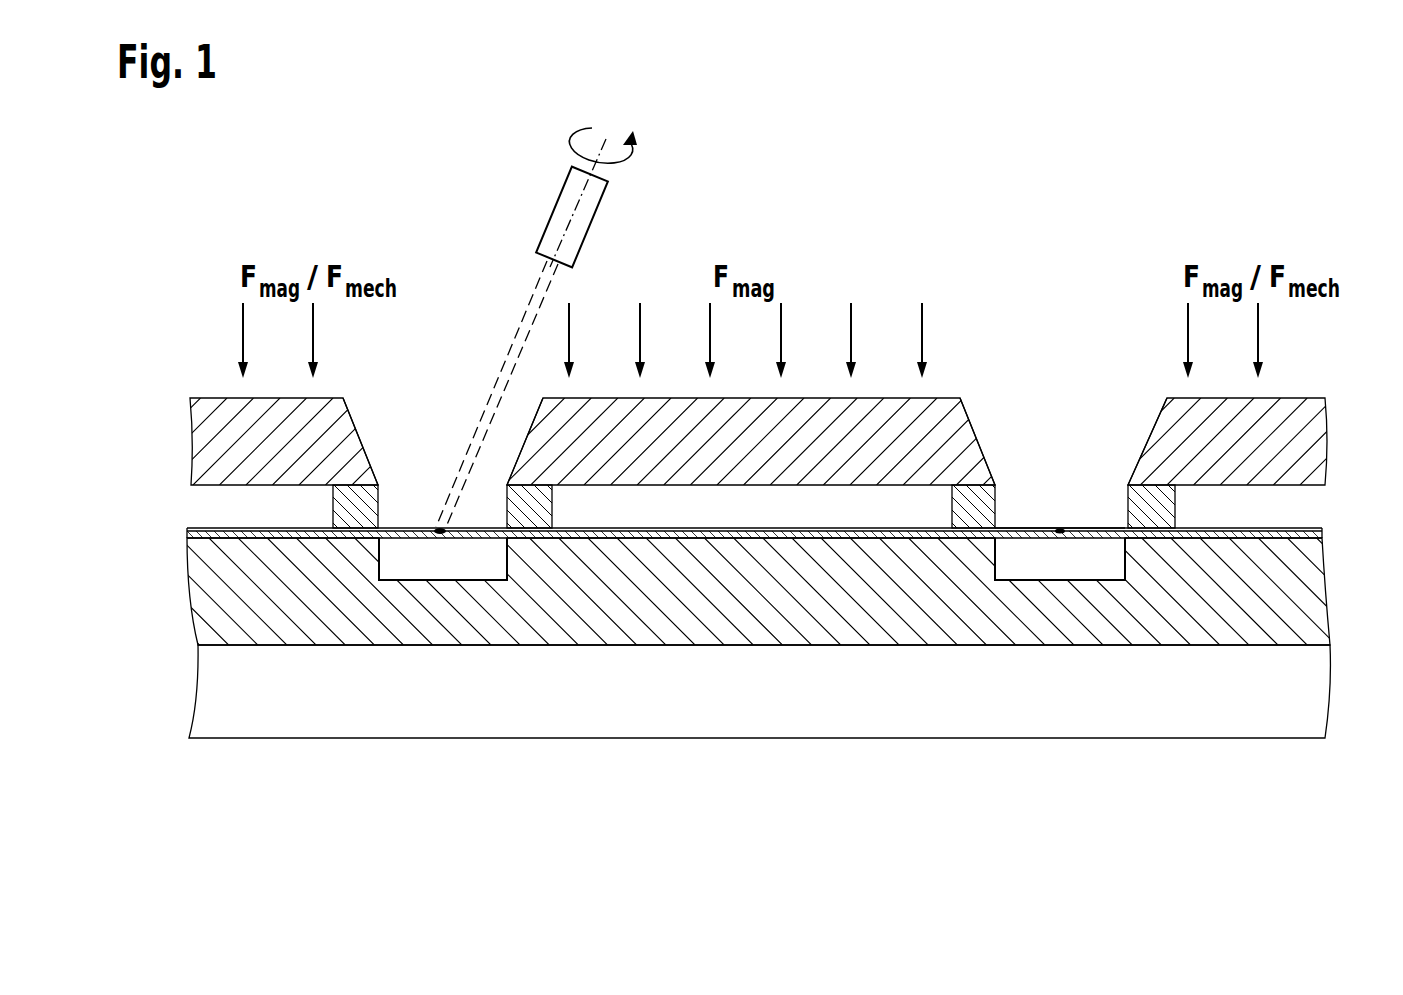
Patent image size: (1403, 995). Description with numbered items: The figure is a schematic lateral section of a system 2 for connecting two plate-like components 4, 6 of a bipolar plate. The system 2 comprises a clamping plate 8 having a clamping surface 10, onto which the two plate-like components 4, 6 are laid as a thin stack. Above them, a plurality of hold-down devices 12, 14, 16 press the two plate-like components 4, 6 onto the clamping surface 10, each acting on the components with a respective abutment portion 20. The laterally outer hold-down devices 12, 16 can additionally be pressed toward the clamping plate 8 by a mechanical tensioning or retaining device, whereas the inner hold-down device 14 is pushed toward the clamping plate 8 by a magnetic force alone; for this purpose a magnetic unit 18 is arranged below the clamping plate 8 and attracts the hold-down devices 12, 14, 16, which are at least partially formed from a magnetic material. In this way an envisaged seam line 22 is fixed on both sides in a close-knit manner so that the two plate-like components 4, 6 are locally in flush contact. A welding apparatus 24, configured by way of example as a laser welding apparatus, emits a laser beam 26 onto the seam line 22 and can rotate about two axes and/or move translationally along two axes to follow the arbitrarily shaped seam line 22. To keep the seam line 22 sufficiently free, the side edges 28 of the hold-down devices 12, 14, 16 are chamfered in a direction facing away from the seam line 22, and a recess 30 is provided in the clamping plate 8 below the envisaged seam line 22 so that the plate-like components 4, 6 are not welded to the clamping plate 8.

The system 2 is at (1082, 292).
The plate-like component 4 is at (1313, 549).
The plate-like component 6 is at (1088, 530).
The clamping plate 8 is at (1300, 596).
The clamping surface 10 is at (1274, 528).
The hold-down device 12 is at (207, 455).
The hold-down device 14 is at (748, 417).
The hold-down device 16 is at (1307, 463).
The magnetic unit 18 is at (1300, 693).
The abutment portion 20 is at (357, 512).
The seam line 22 is at (432, 515).
The welding apparatus 24 is at (565, 207).
The laser beam 26 is at (510, 352).
The side edges 28 is at (338, 433).
The recess 30 is at (1032, 553).